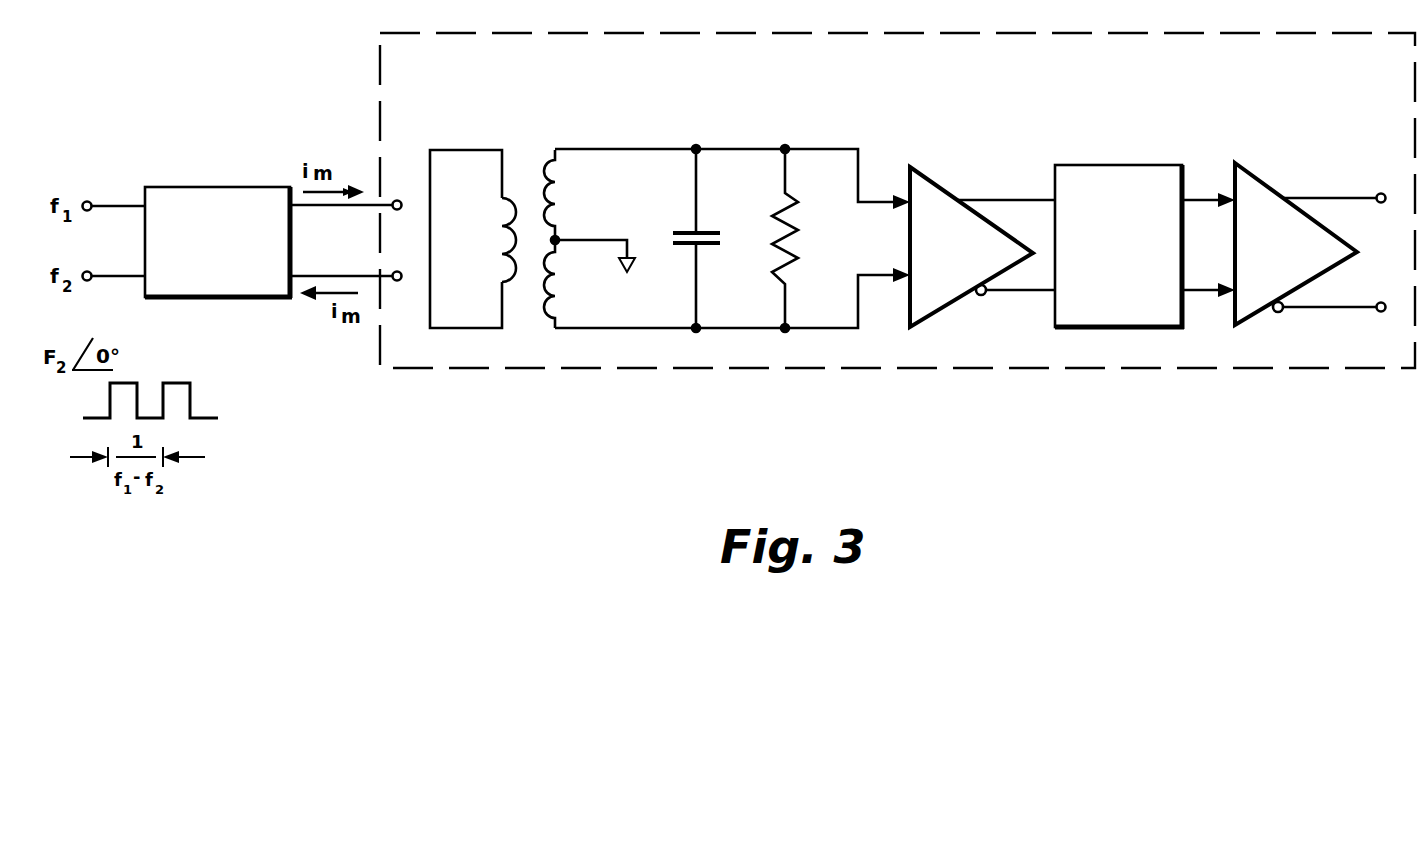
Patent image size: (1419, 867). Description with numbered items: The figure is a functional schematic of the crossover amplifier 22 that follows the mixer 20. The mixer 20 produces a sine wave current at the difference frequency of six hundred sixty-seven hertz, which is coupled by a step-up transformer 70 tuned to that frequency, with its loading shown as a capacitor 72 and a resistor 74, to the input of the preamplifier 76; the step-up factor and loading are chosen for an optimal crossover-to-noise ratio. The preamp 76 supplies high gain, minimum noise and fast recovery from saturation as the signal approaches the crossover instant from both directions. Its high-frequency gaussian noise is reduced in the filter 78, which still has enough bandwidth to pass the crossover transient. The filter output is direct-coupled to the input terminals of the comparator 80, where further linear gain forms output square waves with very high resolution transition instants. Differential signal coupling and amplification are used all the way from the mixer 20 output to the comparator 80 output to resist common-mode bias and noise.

The mixer 20 is at (183, 187).
The crossover amplifier 22 is at (1077, 33).
The transformer 70 is at (524, 157).
The capacitor 72 is at (672, 237).
The resistor 74 is at (773, 218).
The preamplifier 76 is at (938, 186).
The filter 78 is at (1090, 165).
The comparator 80 is at (1268, 186).